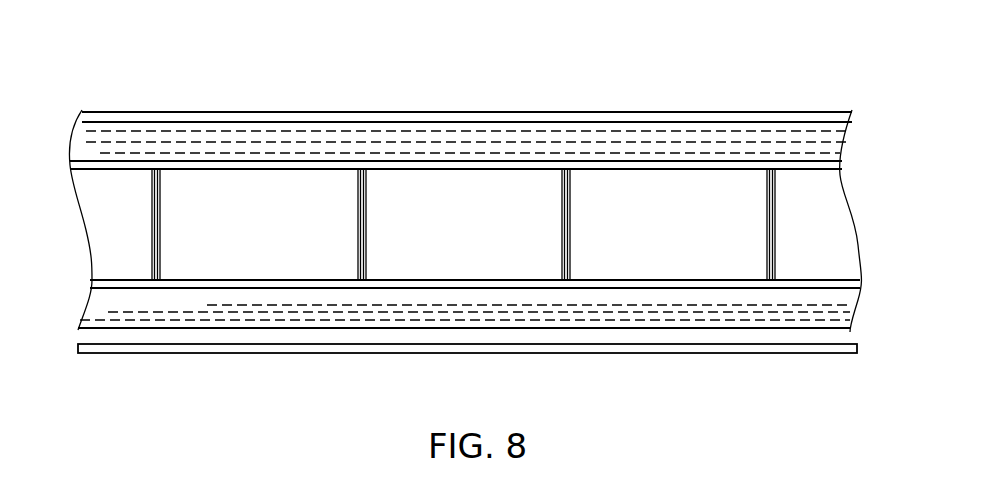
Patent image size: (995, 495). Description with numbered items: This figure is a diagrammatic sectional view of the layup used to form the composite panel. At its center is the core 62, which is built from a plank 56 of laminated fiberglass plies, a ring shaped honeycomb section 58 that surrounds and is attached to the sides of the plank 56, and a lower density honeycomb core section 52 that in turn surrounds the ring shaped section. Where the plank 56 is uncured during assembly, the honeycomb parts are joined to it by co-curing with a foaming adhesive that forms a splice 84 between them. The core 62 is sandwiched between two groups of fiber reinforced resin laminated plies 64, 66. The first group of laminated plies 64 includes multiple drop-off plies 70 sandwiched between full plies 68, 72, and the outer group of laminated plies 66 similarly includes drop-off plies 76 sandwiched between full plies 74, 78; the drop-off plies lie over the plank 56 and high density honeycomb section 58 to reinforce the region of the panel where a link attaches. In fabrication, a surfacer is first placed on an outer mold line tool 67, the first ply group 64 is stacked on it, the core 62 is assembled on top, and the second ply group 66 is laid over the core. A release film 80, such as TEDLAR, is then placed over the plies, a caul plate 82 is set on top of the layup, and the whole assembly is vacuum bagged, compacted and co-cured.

The honeycomb core section 52 is at (813, 200).
The plank 56 is at (548, 262).
The ring shaped honeycomb section 58 is at (188, 253).
The core 62 is at (868, 172).
The laminated plies 64 is at (868, 290).
The laminated plies 66 is at (868, 122).
The outer mold line tool 67 is at (448, 353).
The full ply 68 is at (113, 318).
The drop-off plies 70 is at (310, 297).
The full ply 72 is at (782, 292).
The full ply 74 is at (198, 160).
The drop-off plies 76 is at (567, 133).
The full ply 78 is at (637, 125).
The release film 80 is at (472, 125).
The caul plate 82 is at (255, 113).
The splice 84 is at (148, 205).